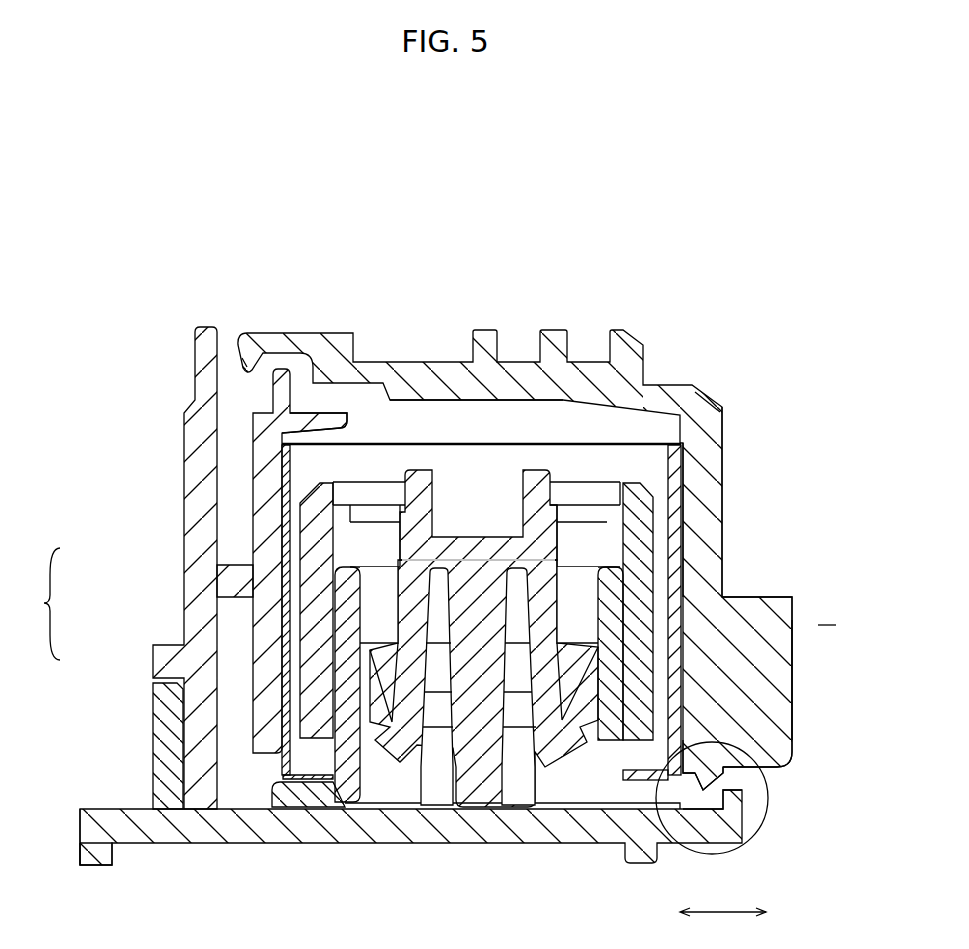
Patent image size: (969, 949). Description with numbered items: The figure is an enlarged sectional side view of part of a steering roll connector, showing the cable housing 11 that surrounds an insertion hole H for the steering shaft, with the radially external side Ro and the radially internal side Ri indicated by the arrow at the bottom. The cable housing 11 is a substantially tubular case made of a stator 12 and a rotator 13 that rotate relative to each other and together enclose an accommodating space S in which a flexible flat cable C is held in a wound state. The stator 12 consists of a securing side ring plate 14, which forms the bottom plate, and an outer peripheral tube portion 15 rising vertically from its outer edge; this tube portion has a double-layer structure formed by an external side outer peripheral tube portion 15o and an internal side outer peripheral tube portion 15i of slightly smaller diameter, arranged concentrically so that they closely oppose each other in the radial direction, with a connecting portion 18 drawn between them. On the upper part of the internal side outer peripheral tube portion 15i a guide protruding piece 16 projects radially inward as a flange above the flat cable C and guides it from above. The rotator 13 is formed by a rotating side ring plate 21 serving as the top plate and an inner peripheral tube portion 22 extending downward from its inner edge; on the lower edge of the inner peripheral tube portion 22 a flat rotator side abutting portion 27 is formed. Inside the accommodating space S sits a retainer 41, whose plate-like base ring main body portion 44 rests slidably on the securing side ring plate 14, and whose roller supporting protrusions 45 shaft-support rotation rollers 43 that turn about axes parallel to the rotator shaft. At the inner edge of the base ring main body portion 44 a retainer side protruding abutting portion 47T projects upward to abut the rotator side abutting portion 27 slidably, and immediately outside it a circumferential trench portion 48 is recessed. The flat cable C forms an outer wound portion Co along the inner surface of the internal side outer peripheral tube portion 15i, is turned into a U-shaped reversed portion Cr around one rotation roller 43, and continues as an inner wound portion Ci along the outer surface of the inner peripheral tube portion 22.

The cable housing 11 is at (167, 251).
The stator 12 is at (178, 854).
The rotator 13 is at (299, 320).
The securing side ring plate 14 is at (240, 845).
The outer peripheral tube portion 15 is at (181, 568).
The external side outer peripheral tube portion 15o is at (185, 557).
The internal side outer peripheral tube portion 15i is at (255, 650).
The guide protruding piece 16 is at (312, 400).
The connecting portion 18 is at (238, 565).
The rotating side ring plate 21 is at (515, 537).
The inner peripheral tube portion 22 is at (722, 443).
The rotator side abutting portion 27 is at (727, 800).
The retainer 41 is at (560, 814).
The rotation roller 43 is at (660, 718).
The base ring main body portion 44 is at (349, 810).
The roller supporting protrusion 45 is at (322, 760).
The retainer side protruding abutting portion 47T is at (705, 753).
The trench portion 48 is at (662, 752).
The flexible flat cable C is at (424, 551).
The outer wound portion Co is at (287, 530).
The inner wound portion Ci is at (690, 512).
The reversed portion Cr is at (567, 455).
The accommodating space S is at (492, 418).
The insertion hole H is at (814, 671).
The radially external side Ro is at (718, 899).
The radially internal side Ri is at (766, 899).